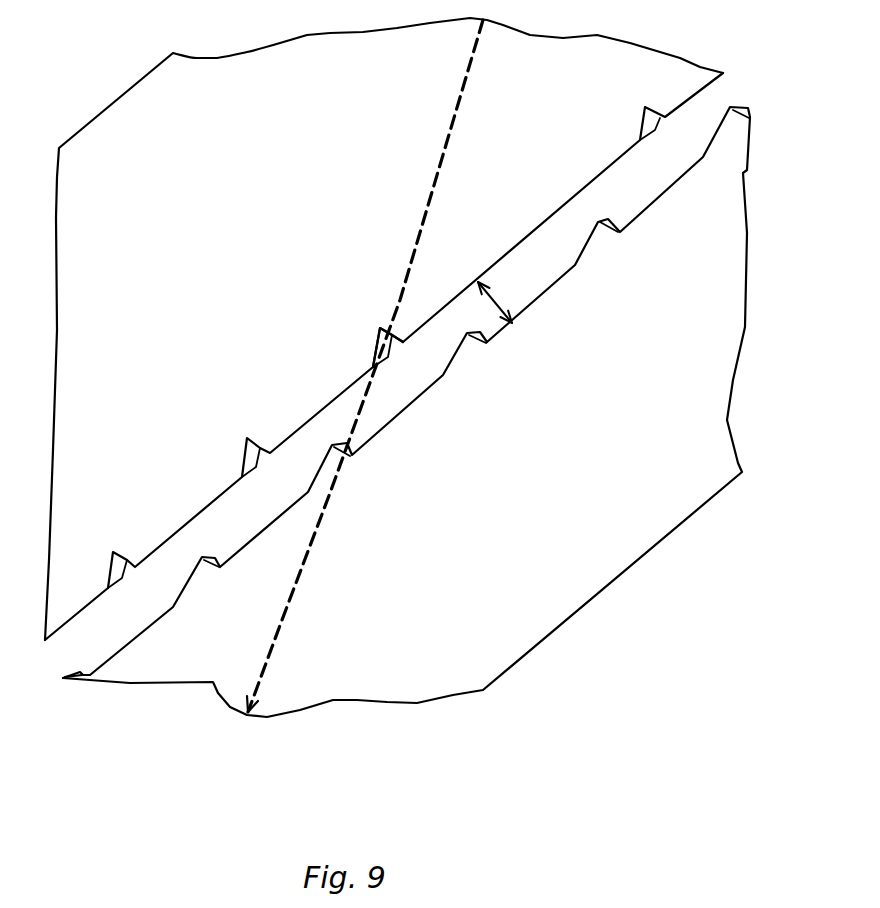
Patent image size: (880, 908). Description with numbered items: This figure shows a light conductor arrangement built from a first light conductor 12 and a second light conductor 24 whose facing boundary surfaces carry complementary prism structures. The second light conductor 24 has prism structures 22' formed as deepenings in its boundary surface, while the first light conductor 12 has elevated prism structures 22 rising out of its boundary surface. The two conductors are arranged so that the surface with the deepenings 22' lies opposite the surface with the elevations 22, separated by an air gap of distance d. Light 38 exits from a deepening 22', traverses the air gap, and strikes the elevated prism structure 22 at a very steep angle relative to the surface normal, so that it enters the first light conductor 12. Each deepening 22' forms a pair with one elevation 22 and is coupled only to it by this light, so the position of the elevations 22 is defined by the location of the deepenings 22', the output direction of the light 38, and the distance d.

The second light conductor 24 is at (240, 233).
The first light conductor 12 is at (504, 553).
The elevated prism structures 22 is at (397, 375).
The prism structures made by deepenings 22' is at (368, 289).
The light 38 is at (270, 662).
The distance d is at (496, 297).